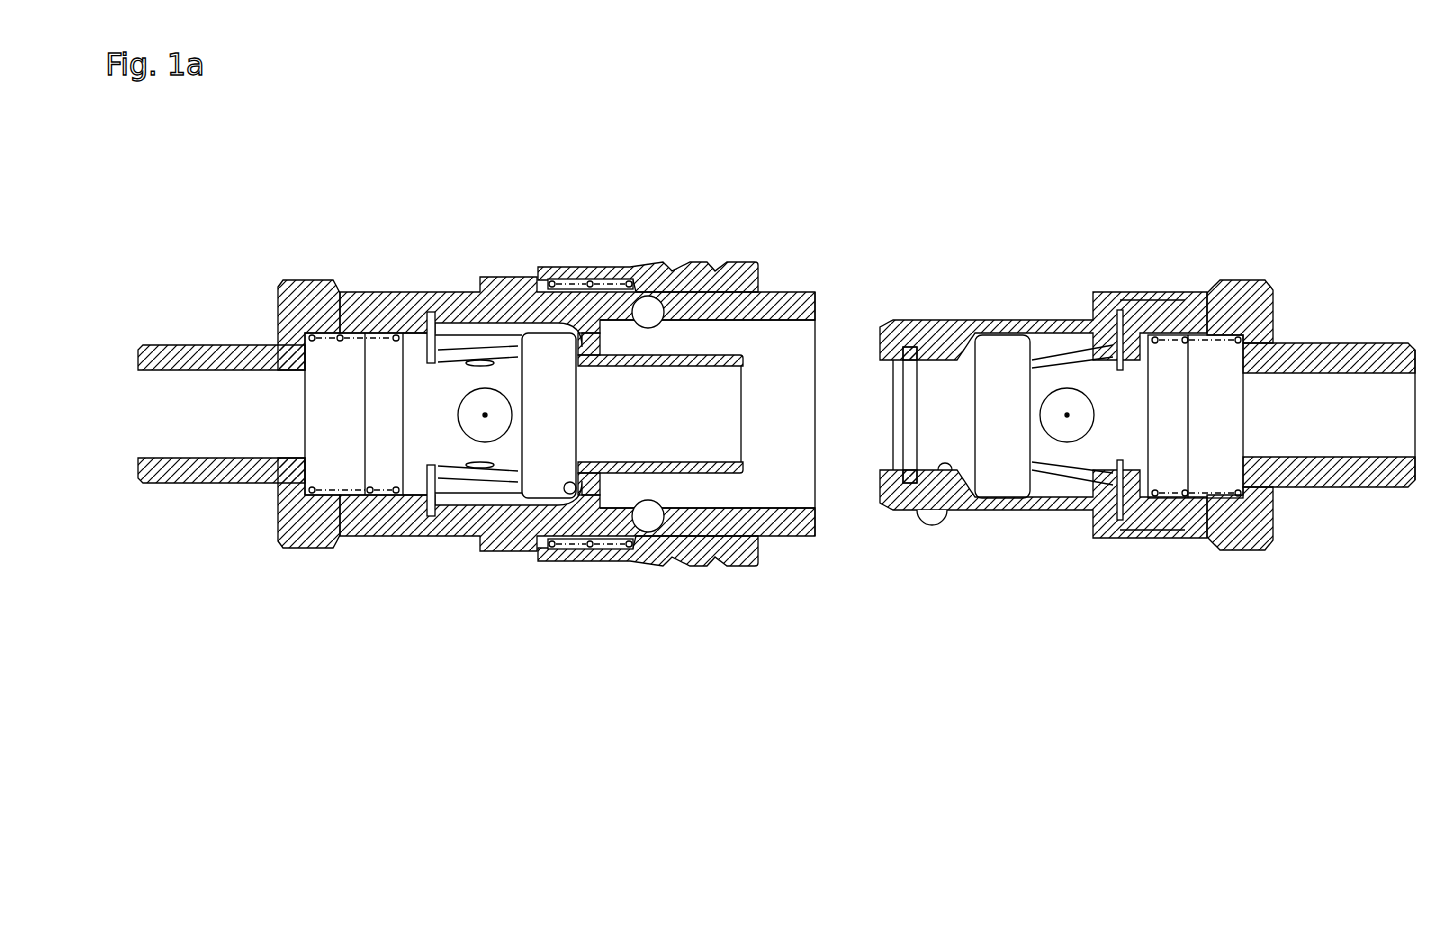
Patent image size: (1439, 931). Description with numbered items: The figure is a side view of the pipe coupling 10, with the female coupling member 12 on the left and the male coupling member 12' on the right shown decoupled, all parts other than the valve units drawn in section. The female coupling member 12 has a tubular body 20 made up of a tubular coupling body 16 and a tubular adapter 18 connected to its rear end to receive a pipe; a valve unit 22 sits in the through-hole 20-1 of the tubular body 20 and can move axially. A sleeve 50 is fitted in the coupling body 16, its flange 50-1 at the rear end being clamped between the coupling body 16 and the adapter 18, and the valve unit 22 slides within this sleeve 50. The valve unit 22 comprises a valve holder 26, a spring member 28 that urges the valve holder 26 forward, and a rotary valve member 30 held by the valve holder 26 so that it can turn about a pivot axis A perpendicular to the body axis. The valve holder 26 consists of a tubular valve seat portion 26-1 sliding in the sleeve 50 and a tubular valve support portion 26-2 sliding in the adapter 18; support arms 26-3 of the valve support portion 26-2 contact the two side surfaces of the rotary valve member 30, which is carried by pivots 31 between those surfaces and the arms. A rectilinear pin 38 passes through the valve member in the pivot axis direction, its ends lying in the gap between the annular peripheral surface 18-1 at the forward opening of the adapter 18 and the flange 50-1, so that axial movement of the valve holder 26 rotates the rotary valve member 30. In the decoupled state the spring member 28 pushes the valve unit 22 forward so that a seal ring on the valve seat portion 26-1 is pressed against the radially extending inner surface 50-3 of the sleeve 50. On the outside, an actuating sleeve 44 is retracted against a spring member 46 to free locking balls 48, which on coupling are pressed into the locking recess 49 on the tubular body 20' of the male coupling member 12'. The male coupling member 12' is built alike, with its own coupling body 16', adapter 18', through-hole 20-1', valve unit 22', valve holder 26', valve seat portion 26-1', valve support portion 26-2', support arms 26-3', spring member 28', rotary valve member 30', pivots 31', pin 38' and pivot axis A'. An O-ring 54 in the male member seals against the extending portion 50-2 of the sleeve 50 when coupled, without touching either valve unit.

The pipe coupling 10 is at (862, 214).
The female coupling member 12 is at (476, 399).
The male coupling member 12' is at (1140, 404).
The tubular coupling body 16 is at (454, 358).
The tubular coupling body 16' is at (1047, 277).
The tubular adapter 18 is at (221, 384).
The tubular adapter 18' is at (1329, 358).
The annular peripheral surface 18-1 is at (434, 352).
The tubular body 20 is at (567, 382).
The tubular body 20' is at (1058, 383).
The through-hole 20-1 is at (707, 463).
The through-hole 20-1' is at (943, 519).
The valve unit 22 is at (480, 555).
The valve unit 22' is at (1040, 527).
The valve holder 26 is at (518, 522).
The valve holder 26' is at (1229, 340).
The tubular valve seat portion 26-1 is at (610, 288).
The tubular valve seat portion 26-1' is at (956, 297).
The tubular valve support portion 26-2 is at (355, 480).
The tubular valve support portion 26-2' is at (1107, 516).
The support arms 26-3 is at (529, 367).
The support arms 26-3' is at (1007, 379).
The spring member 28 is at (320, 411).
The spring member 28' is at (1271, 415).
The rotary valve member 30 is at (478, 353).
The rotary valve member 30' is at (1072, 372).
The pivots 31 is at (513, 415).
The pivots 31' is at (1067, 507).
The rectilinear pin 38 is at (426, 414).
The rectilinear pin 38' is at (1122, 415).
The actuating sleeve 44 is at (690, 263).
The spring member 46 is at (554, 280).
The locking balls 48 is at (648, 310).
The locking recess 49 is at (920, 513).
The sleeve 50 is at (692, 348).
The flange 50-1 is at (442, 517).
The extending portion 50-2 is at (713, 470).
The radially extending inner surface 50-3 is at (572, 494).
The O-ring 54 is at (909, 349).
The pivot axis A is at (520, 447).
The pivot axis A' is at (1097, 333).